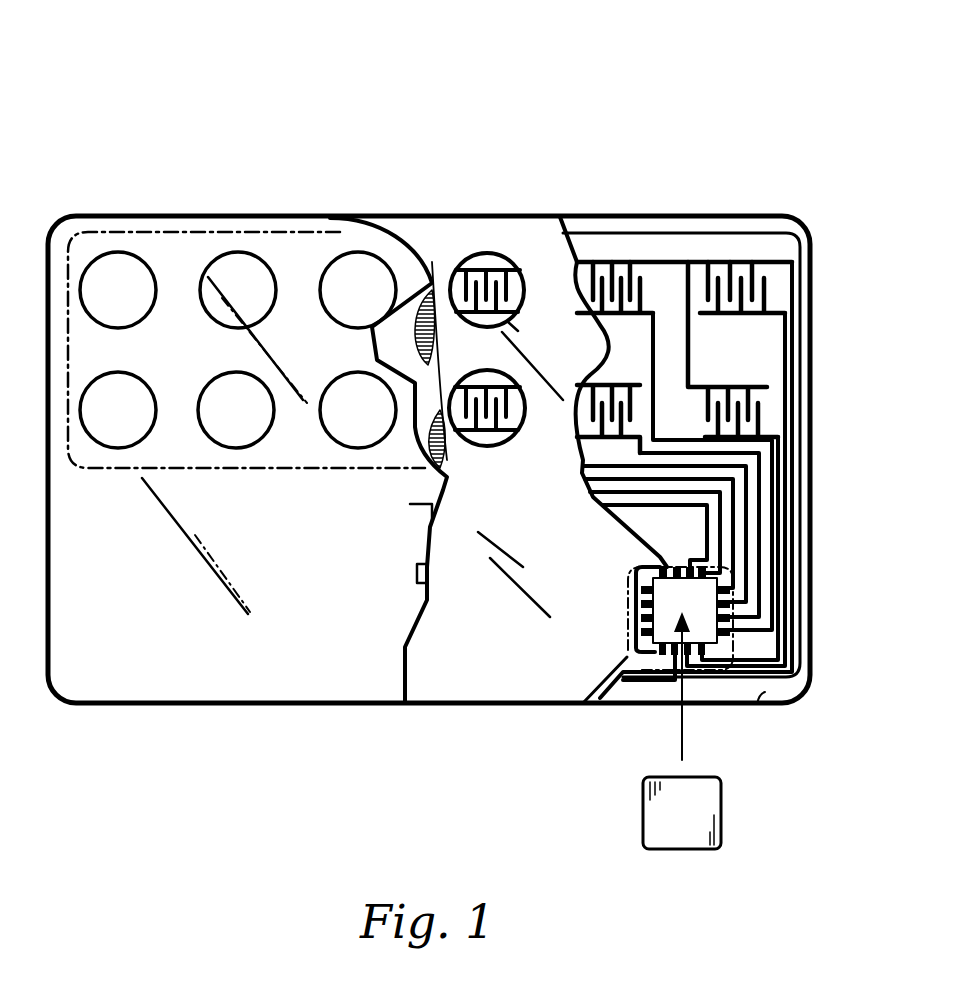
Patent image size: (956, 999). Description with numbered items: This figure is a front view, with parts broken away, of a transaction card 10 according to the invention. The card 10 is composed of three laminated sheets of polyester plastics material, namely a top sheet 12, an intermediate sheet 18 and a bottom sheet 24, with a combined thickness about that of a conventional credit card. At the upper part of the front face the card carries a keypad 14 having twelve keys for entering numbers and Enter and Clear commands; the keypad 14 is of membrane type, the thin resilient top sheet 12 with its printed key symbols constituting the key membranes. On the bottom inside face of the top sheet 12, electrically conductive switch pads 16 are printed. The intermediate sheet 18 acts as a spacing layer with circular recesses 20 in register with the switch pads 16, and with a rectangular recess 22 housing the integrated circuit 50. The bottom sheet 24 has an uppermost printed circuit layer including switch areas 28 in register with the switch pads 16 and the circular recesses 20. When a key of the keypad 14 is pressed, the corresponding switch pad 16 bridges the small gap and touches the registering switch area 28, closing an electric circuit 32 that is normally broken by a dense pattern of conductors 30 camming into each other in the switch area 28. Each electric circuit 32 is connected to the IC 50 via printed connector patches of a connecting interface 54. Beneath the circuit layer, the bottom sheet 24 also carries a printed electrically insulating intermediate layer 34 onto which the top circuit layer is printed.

The card 10 is at (684, 78).
The top sheet 12 is at (345, 704).
The keypad 14 is at (128, 232).
The switch pads 16 is at (438, 338).
The intermediate sheet 18 is at (540, 702).
The circular recesses 20 is at (525, 278).
The rectangular recess 22 is at (660, 568).
The bottom sheet 24 is at (757, 704).
The switch areas 28 is at (731, 252).
The conductors 30 is at (527, 300).
The electric circuit 32 is at (808, 440).
The insulating intermediate layer 34 is at (773, 233).
The integrated circuit 50 is at (722, 806).
The connecting interface 54 is at (627, 600).